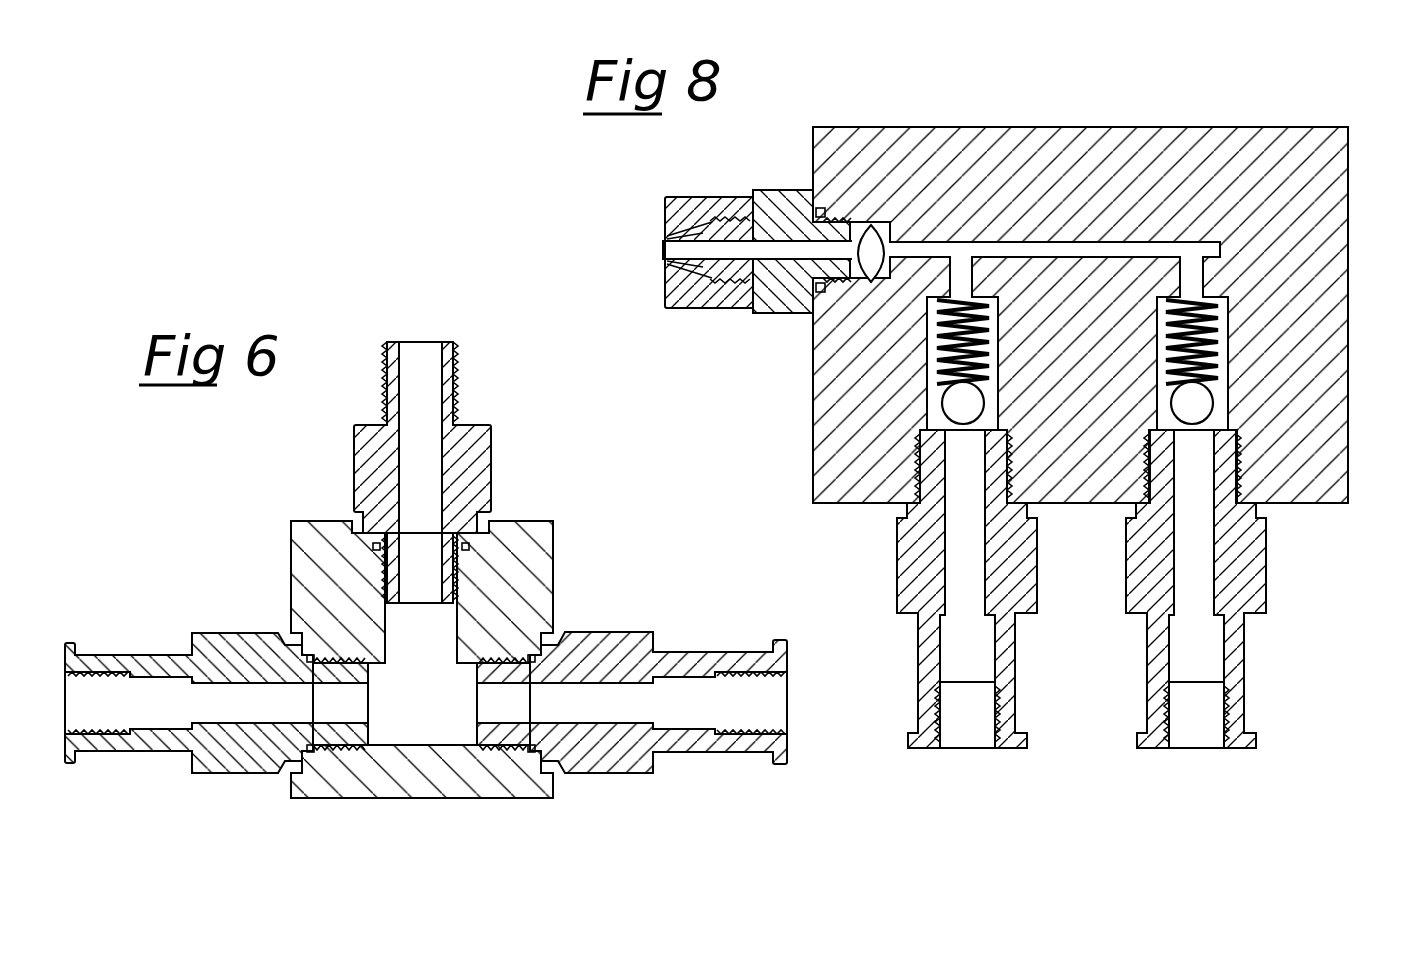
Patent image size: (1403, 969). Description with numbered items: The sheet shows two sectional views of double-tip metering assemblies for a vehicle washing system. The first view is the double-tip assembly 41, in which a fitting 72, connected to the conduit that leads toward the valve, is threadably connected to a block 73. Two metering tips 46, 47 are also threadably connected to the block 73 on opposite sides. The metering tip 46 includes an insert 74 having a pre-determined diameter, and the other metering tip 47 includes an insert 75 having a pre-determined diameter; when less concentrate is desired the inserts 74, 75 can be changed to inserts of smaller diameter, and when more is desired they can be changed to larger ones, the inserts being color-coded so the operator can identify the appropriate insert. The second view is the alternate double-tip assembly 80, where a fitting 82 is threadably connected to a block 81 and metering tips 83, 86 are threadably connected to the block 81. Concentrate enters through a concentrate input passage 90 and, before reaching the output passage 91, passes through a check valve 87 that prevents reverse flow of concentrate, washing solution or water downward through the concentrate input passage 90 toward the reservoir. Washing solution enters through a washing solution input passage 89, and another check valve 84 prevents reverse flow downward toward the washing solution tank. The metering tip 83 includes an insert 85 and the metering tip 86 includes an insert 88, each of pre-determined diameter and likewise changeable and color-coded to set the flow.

In FIG. 6, the double-tip assembly 41 is at (276, 475).
In FIG. 6, the fitting 72 is at (494, 461).
In FIG. 6, the block 73 is at (556, 557).
In FIG. 6, the insert 74 is at (612, 692).
In FIG. 6, the insert 75 is at (157, 690).
In FIG. 6, the metering tip 46 is at (618, 773).
In FIG. 6, the metering tip 47 is at (240, 775).
In FIG. 8, the alternate double-tip assembly 80 is at (1249, 73).
In FIG. 8, the block 81 is at (1020, 126).
In FIG. 8, the fitting 82 is at (793, 190).
In FIG. 8, the metering tip 83 is at (898, 547).
In FIG. 8, the check valve 84 is at (942, 404).
In FIG. 8, the insert 85 is at (953, 652).
In FIG. 8, the metering tip 86 is at (1267, 578).
In FIG. 8, the check valve 87 is at (1217, 398).
In FIG. 8, the insert 88 is at (1210, 655).
In FIG. 8, the washing solution input passage 89 is at (973, 553).
In FIG. 8, the concentrate input passage 90 is at (1188, 560).
In FIG. 8, the output passage 91 is at (790, 256).